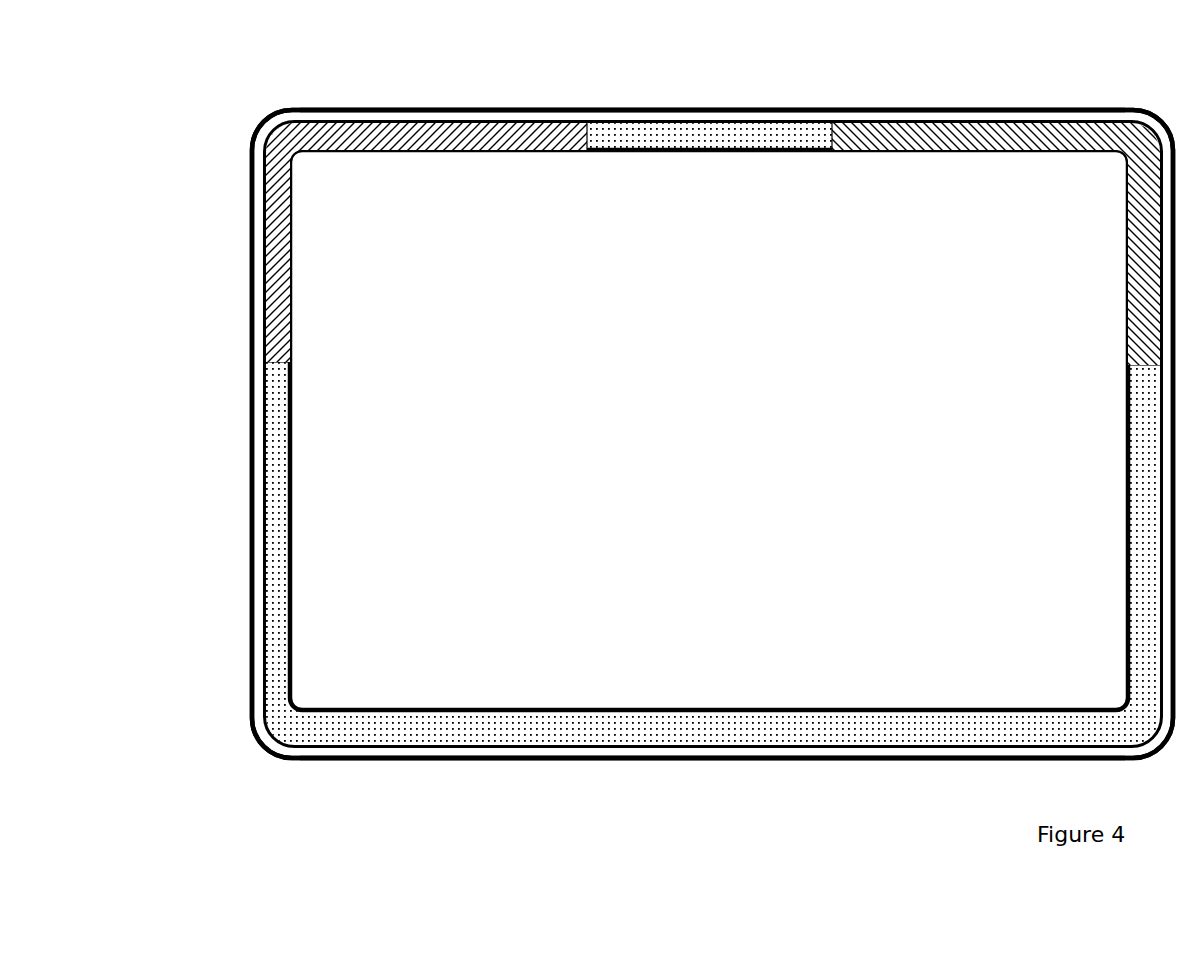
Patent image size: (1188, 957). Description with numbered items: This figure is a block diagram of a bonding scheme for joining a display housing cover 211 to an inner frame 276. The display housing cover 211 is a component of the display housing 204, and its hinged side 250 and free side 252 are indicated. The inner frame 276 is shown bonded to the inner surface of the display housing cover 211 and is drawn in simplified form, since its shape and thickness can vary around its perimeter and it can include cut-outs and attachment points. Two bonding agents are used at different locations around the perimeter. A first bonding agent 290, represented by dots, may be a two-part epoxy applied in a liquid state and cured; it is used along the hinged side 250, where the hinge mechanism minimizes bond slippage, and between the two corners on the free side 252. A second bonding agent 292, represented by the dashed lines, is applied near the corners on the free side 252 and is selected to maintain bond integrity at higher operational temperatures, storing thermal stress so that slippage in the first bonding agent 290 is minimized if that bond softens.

The display housing 204 is at (198, 332).
The display housing cover 211 is at (356, 333).
The hinged side 250 is at (672, 762).
The free side 252 is at (627, 108).
The inner frame 276 is at (289, 350).
The first bonding agent 290 is at (1142, 412).
The second bonding agent 292 is at (897, 128).